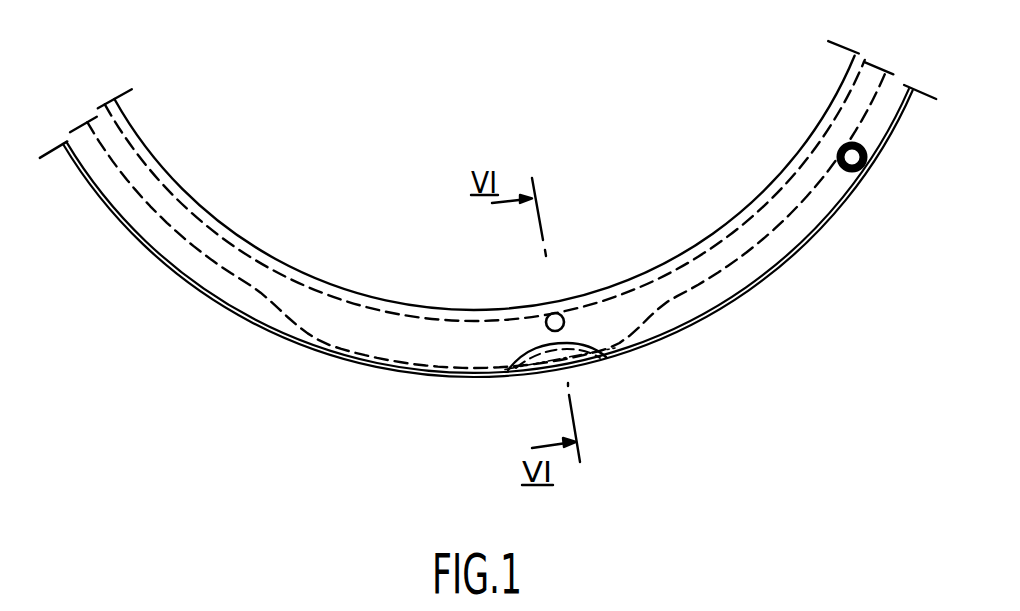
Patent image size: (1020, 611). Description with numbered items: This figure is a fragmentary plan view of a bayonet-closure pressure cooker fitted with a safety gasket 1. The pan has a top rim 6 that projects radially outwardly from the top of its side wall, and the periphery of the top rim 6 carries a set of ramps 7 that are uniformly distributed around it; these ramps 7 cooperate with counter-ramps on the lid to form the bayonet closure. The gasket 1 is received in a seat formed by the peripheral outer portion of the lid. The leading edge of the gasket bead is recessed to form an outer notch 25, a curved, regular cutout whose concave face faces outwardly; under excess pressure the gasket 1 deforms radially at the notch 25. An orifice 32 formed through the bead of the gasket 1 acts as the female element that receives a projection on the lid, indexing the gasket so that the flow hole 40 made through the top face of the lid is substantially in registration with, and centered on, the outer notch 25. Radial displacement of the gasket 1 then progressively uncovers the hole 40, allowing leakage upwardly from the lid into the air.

The safety gasket 1 is at (192, 257).
The top rim 6 is at (758, 233).
The ramps 7 is at (410, 353).
The outer notch 25 is at (578, 348).
The orifice 32 is at (862, 176).
The flow hole 40 is at (556, 313).